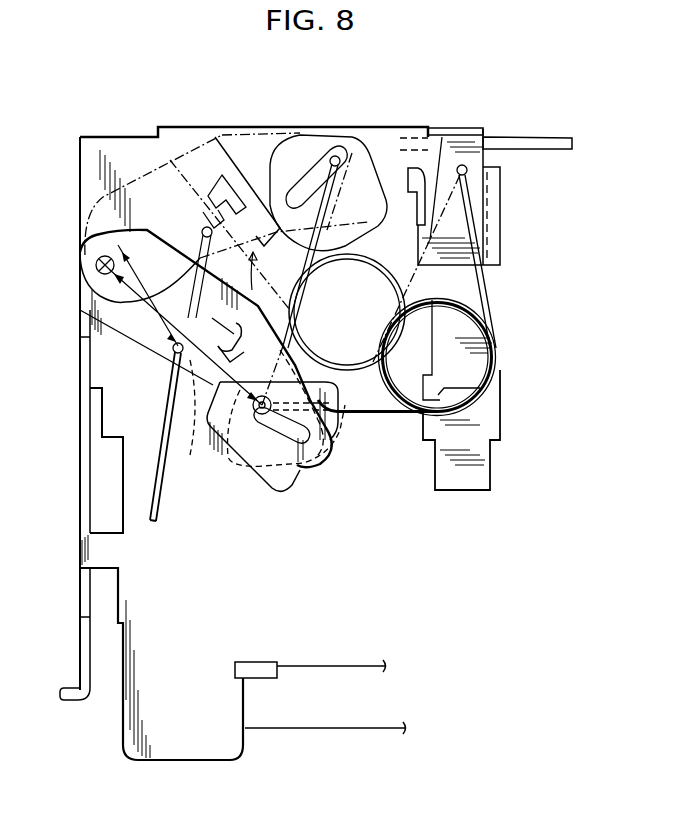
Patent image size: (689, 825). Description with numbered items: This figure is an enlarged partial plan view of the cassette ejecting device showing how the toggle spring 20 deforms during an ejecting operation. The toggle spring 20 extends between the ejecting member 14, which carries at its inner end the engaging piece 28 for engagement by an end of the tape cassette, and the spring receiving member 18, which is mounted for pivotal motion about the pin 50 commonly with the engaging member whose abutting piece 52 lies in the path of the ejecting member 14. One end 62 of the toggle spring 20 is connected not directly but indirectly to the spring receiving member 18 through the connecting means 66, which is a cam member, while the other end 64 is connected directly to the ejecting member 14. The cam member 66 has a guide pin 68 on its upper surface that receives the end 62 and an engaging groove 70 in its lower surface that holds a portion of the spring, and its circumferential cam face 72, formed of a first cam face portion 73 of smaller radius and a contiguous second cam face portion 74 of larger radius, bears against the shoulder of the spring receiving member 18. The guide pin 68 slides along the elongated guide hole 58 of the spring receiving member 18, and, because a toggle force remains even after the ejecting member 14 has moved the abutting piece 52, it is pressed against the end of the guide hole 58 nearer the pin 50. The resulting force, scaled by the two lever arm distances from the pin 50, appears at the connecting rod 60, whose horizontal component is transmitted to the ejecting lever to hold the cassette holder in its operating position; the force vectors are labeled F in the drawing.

The ejecting member 14 is at (505, 235).
The spring receiving member 18 is at (114, 347).
The toggle spring 20 is at (497, 350).
The engaging piece 28 is at (527, 136).
The pin 50 is at (96, 265).
The abutting piece 52 is at (466, 130).
The guide hole 58 is at (302, 430).
The connecting rod 60 is at (162, 442).
The end of the toggle spring 62 is at (340, 158).
The other end of the toggle spring 64 is at (468, 170).
The connecting means 66 is at (326, 472).
The guide pin 68 is at (270, 415).
The engaging groove 70 is at (340, 400).
The cam face 72 is at (287, 135).
The first cam face portion 73 is at (340, 152).
The second cam face portion 74 is at (272, 140).
The force F is at (316, 372).